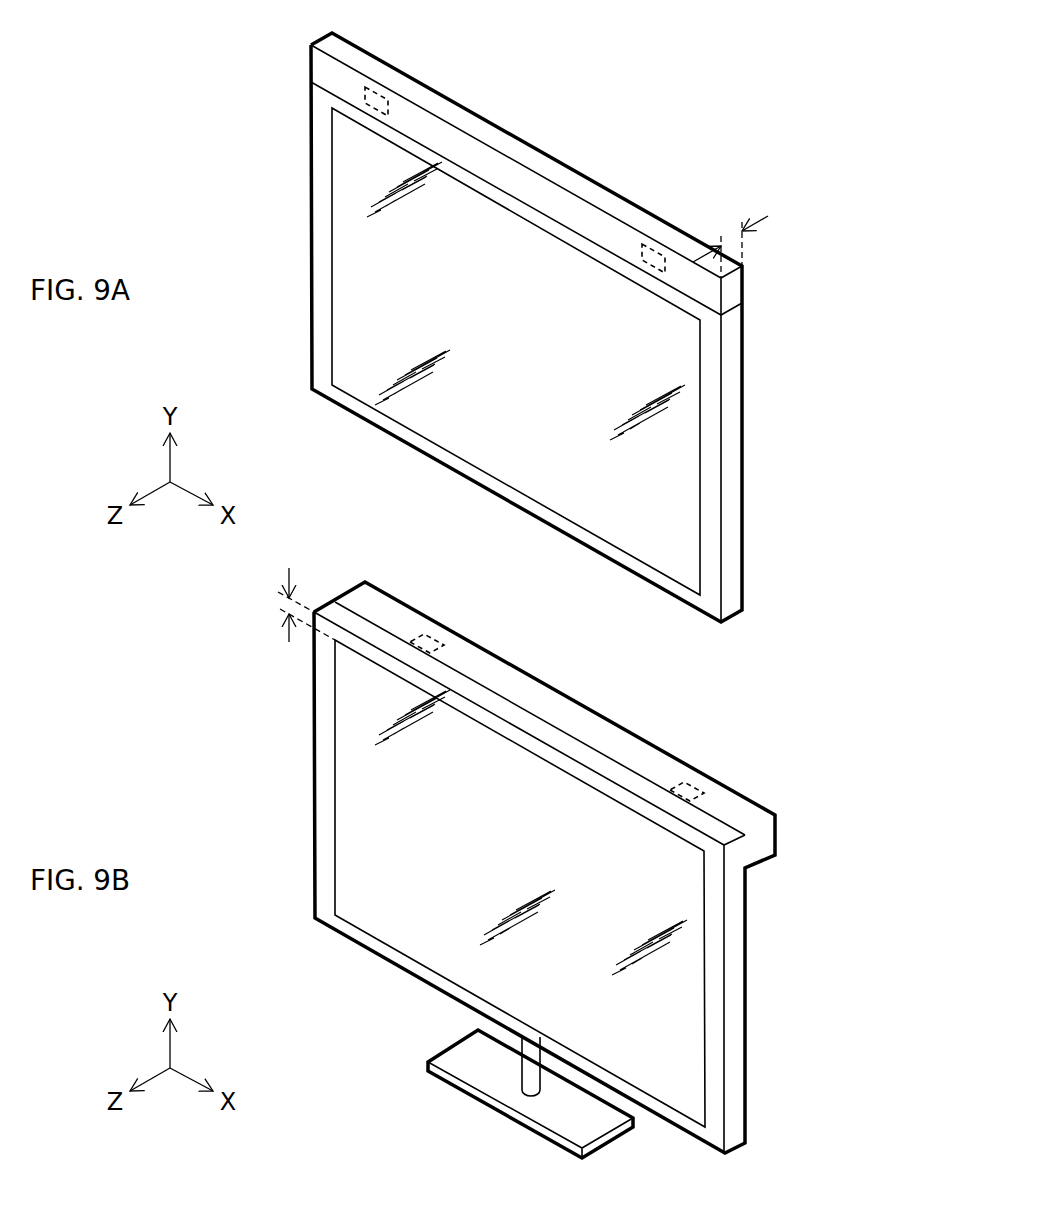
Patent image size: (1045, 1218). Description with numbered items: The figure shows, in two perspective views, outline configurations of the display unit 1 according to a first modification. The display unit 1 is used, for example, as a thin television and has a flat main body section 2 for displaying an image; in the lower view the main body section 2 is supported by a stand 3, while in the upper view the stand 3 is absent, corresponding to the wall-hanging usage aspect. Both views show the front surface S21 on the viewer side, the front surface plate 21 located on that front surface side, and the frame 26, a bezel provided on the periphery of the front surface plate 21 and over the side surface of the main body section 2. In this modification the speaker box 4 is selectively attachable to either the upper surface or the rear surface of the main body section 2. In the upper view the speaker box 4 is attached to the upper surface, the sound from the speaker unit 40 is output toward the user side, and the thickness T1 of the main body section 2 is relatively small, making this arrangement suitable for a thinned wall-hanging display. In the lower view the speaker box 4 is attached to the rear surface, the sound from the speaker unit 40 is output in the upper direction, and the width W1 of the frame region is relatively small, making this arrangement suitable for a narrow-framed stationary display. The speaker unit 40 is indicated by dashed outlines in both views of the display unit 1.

In FIG. 9A, the display unit 1 is at (680, 122).
In FIG. 9B, the display unit 1 is at (778, 742).
In FIG. 9A, the main body section 2 is at (752, 375).
In FIG. 9B, the main body section 2 is at (752, 905).
In FIG. 9B, the stand 3 is at (495, 1088).
In FIG. 9A, the speaker box 4 is at (510, 175).
In FIG. 9B, the speaker box 4 is at (550, 705).
In FIG. 9A, the front surface plate 21 is at (680, 450).
In FIG. 9B, the front surface plate 21 is at (680, 980).
In FIG. 9A, the frame 26 is at (710, 508).
In FIG. 9B, the frame 26 is at (710, 1040).
In FIG. 9A, the speaker unit 40 is at (382, 86).
In FIG. 9B, the speaker unit 40 is at (440, 630).
In FIG. 9A, the front surface S21 is at (355, 258).
In FIG. 9B, the front surface S21 is at (355, 787).
In FIG. 9A, the thickness of the main body section T1 is at (730, 237).
In FIG. 9B, the width of the frame region W1 is at (284, 605).